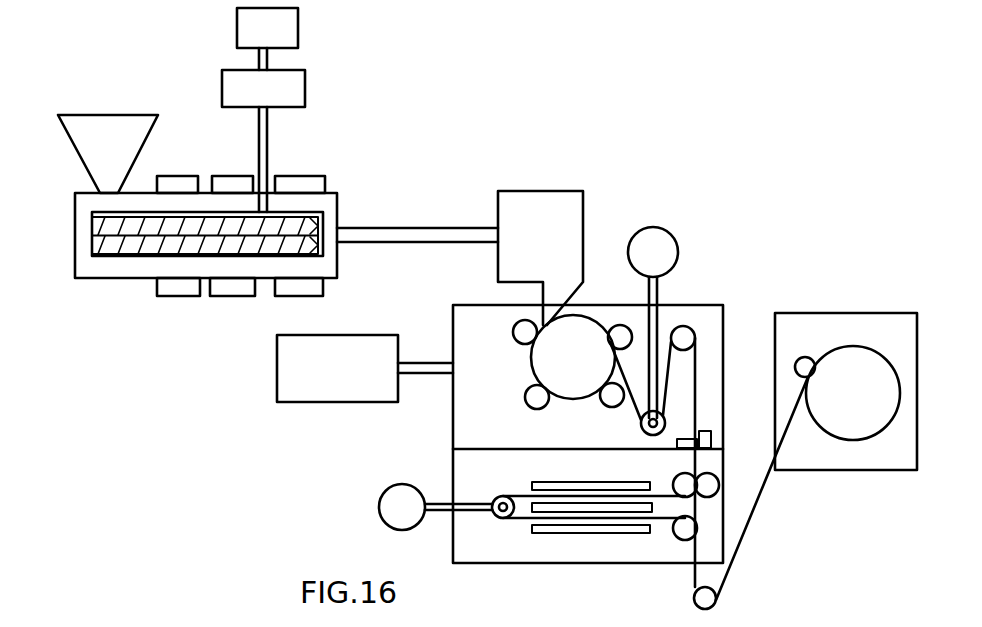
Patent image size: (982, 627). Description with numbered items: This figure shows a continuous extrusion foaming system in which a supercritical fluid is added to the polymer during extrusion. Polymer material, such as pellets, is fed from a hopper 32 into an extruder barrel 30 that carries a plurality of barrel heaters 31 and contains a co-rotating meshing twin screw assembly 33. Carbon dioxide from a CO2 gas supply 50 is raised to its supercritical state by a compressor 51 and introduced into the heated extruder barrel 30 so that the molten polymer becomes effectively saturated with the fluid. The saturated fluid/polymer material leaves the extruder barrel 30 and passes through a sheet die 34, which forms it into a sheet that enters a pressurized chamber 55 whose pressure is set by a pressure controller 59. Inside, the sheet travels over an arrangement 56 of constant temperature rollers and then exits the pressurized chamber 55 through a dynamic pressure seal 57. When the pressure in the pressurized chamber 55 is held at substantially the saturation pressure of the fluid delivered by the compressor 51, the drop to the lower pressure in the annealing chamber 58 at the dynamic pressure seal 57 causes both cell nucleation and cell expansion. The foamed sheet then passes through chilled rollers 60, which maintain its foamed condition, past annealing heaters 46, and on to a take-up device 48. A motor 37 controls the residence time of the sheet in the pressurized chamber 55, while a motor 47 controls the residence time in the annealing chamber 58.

The extruder barrel 30 is at (128, 272).
The barrel heaters 31 is at (198, 192).
The hopper 32 is at (158, 128).
The co-rotating meshing twin screw assembly 33 is at (217, 228).
The sheet die 34 is at (575, 202).
The motor 37 is at (678, 252).
The annealing heaters 46 is at (613, 488).
The motor 47 is at (384, 490).
The take-up device 48 is at (815, 313).
The CO2 gas supply 50 is at (298, 30).
The compressor 51 is at (305, 85).
The pressurized chamber 55 is at (453, 318).
The arrangement of constant temperature rollers 56 is at (507, 408).
The dynamic pressure seal 57 is at (710, 435).
The annealing chamber 58 is at (452, 456).
The pressure controller 59 is at (337, 403).
The chilled rollers 60 is at (716, 481).